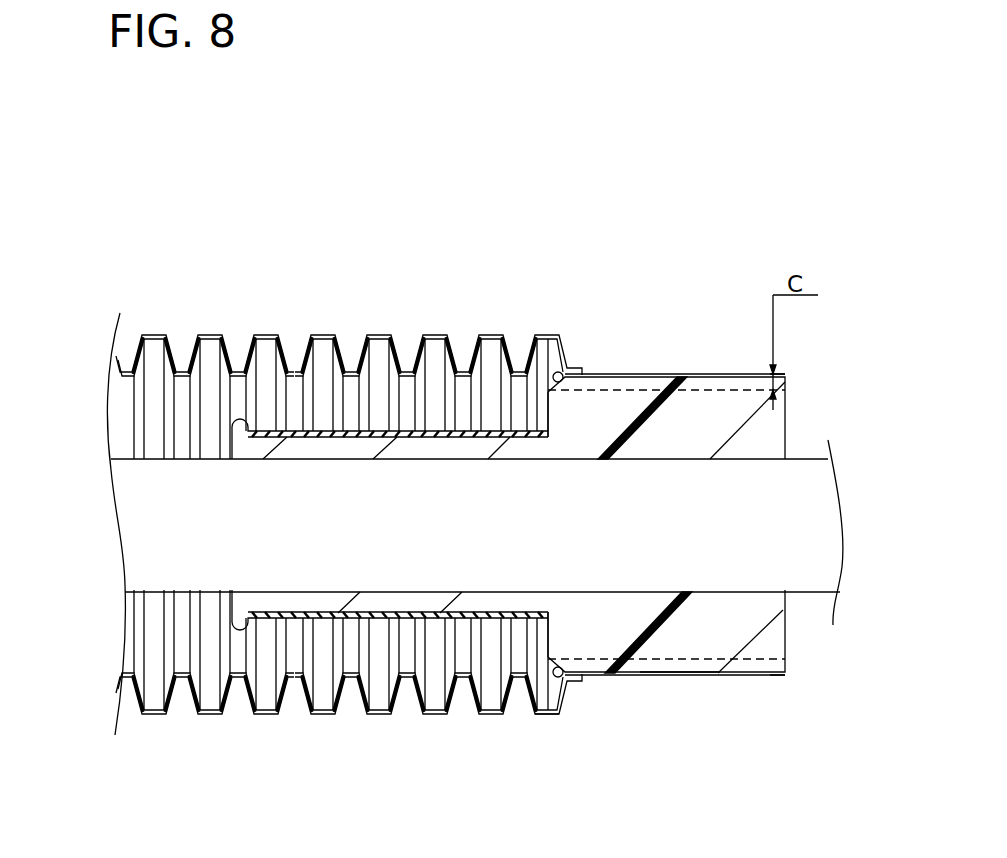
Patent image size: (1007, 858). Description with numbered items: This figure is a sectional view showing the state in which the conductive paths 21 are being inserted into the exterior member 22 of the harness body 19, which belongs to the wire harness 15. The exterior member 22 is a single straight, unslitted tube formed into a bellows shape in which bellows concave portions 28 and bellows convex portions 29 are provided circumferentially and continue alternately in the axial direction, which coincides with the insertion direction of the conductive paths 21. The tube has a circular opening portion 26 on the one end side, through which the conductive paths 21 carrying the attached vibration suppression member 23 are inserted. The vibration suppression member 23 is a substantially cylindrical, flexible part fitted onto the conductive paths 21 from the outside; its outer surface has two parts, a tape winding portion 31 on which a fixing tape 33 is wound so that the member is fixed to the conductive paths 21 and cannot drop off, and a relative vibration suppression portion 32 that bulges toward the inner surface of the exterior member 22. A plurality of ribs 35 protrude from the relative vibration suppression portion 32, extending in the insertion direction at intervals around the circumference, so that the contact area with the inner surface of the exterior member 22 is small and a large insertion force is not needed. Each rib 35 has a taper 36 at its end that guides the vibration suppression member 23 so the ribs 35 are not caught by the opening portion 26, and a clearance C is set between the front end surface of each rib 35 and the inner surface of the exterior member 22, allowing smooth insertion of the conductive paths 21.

The wire harness 15 is at (190, 235).
The harness body 19 is at (172, 282).
The conductive path 21 is at (147, 513).
The exterior member 22 is at (325, 336).
The vibration suppression member 23 is at (675, 677).
The opening portion 26 is at (587, 680).
The bellows concave portion 28 is at (517, 702).
The bellows convex portion 29 is at (545, 714).
The tape winding portion 31 is at (278, 604).
The relative vibration suppression portion 32 is at (733, 625).
The fixing tape 33 is at (407, 425).
The rib 35 is at (787, 382).
The taper 36 is at (563, 366).